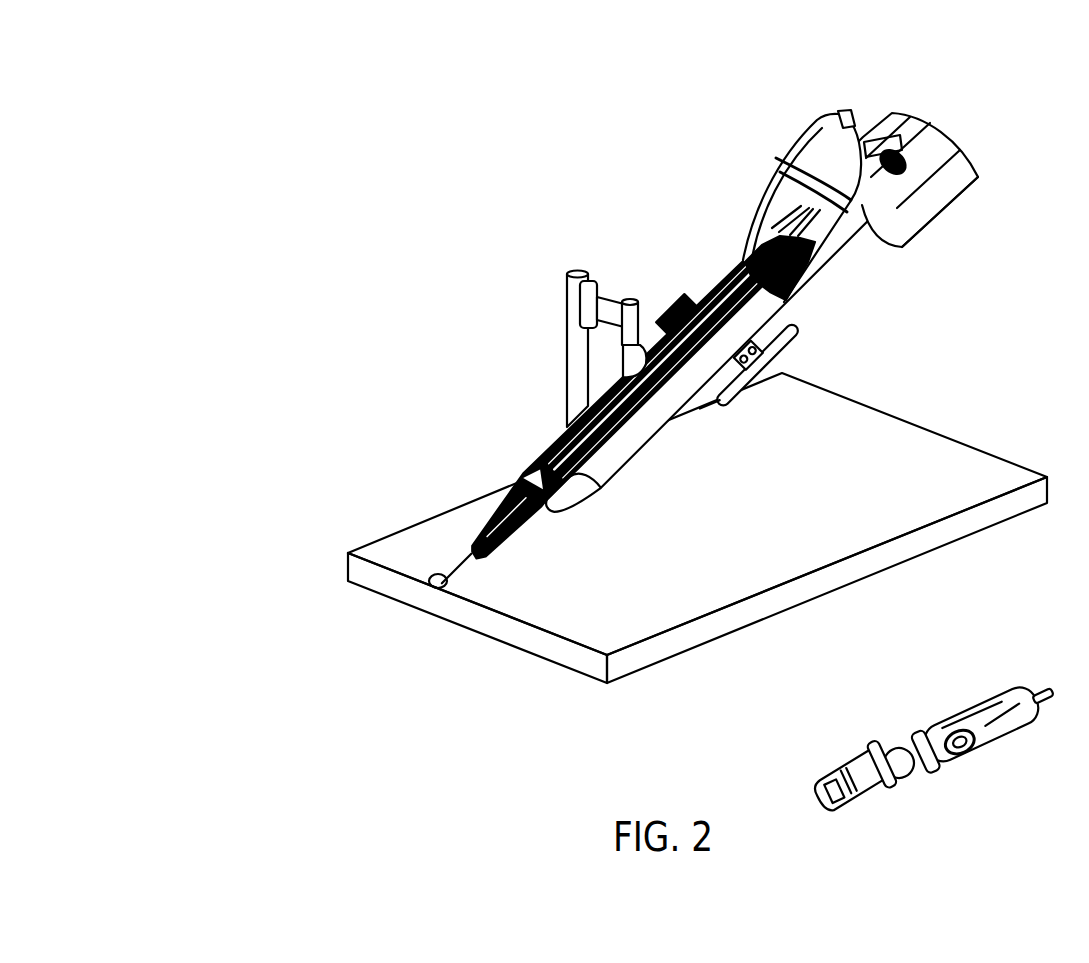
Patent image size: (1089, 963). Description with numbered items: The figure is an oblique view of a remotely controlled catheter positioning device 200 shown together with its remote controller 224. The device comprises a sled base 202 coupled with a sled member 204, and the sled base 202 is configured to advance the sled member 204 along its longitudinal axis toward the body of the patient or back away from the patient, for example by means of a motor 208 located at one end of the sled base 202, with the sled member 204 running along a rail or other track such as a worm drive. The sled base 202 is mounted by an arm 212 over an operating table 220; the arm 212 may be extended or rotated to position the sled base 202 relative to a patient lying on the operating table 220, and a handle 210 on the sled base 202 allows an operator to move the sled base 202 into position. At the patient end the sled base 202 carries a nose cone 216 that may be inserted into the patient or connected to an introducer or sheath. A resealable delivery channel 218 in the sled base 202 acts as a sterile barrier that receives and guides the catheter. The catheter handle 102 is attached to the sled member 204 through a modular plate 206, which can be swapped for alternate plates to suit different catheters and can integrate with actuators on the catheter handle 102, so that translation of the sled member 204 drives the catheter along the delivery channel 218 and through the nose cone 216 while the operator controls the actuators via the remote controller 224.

The catheter positioning device 200 is at (250, 168).
The catheter handle 102 is at (802, 268).
The sled base 202 is at (652, 432).
The sled member 204 is at (945, 205).
The modular plate 206 is at (762, 190).
The motor 208 is at (903, 115).
The handle 210 is at (793, 334).
The arm 212 is at (565, 312).
The nose cone 216 is at (438, 588).
The resealable delivery channel 218 is at (558, 452).
The operating table 220 is at (933, 550).
The remote controller 224 is at (870, 752).